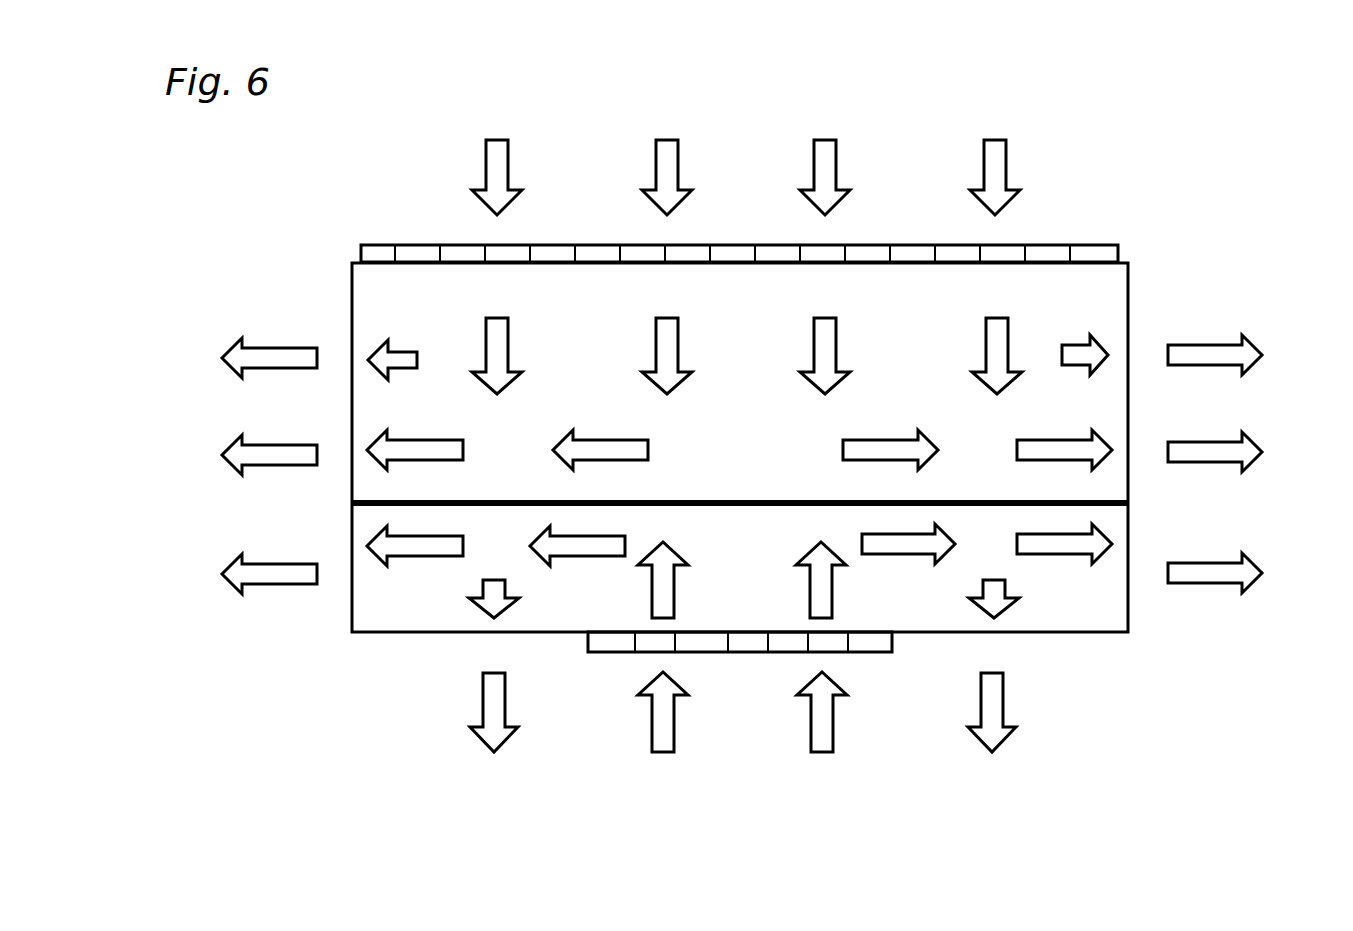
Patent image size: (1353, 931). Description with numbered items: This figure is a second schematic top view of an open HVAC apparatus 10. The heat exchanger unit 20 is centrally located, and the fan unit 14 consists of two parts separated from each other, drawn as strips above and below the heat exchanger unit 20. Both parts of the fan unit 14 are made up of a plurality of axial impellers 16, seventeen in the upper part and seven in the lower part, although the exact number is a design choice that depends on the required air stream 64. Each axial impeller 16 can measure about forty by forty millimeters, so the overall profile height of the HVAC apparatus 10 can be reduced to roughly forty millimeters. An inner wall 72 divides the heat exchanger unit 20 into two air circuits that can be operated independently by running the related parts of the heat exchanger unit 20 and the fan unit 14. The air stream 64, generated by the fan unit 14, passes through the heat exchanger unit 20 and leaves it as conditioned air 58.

The HVAC apparatus 10 is at (275, 816).
The fan unit 14 is at (1133, 230).
The axial impellers 16 is at (548, 240).
The heat exchanger unit 20 is at (348, 315).
The conditioned air 58 is at (270, 430).
The air stream 64 is at (712, 408).
The inner wall 72 is at (468, 498).